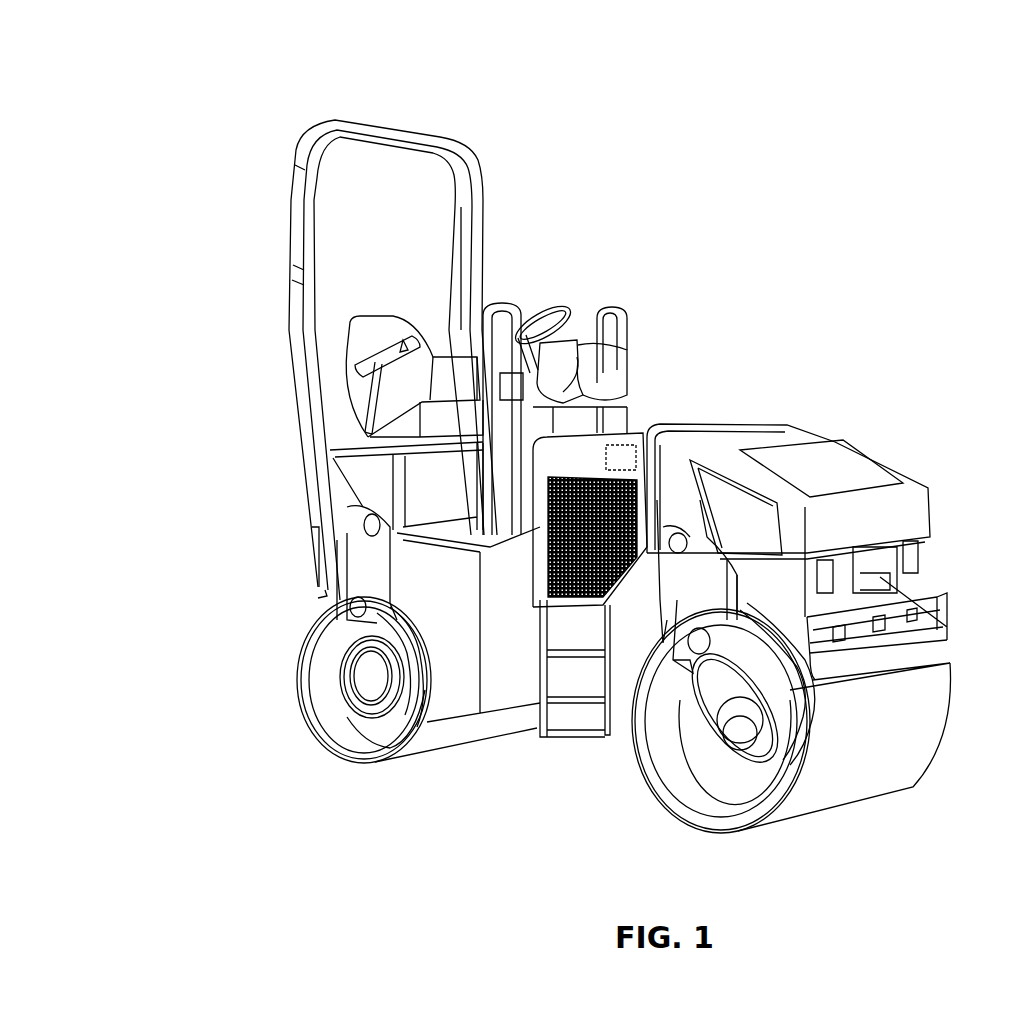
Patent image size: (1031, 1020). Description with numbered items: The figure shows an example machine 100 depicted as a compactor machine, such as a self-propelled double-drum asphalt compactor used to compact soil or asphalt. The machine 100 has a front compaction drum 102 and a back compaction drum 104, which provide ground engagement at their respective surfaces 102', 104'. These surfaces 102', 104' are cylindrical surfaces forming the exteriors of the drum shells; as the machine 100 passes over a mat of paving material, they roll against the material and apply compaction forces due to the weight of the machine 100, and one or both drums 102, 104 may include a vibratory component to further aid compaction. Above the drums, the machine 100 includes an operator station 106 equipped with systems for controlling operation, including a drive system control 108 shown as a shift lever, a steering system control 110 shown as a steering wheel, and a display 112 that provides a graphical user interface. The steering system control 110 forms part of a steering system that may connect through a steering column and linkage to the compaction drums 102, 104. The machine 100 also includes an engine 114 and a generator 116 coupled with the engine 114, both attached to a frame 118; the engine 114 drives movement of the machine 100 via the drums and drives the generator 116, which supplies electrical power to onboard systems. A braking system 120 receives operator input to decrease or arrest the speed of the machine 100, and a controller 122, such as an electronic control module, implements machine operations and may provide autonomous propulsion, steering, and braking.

The machine 100 is at (172, 49).
The front compaction drum 102 is at (796, 721).
The surface of the front compaction drum 102' is at (788, 766).
The back compaction drum 104 is at (333, 680).
The surface of the back compaction drum 104' is at (447, 737).
The operator station 106 is at (582, 297).
The drive system control 108 is at (390, 318).
The steering system control 110 is at (535, 310).
The display 112 is at (560, 340).
The engine 114 is at (950, 597).
The generator 116 is at (947, 628).
The frame 118 is at (915, 503).
The braking system 120 is at (735, 777).
The controller 122 is at (625, 453).